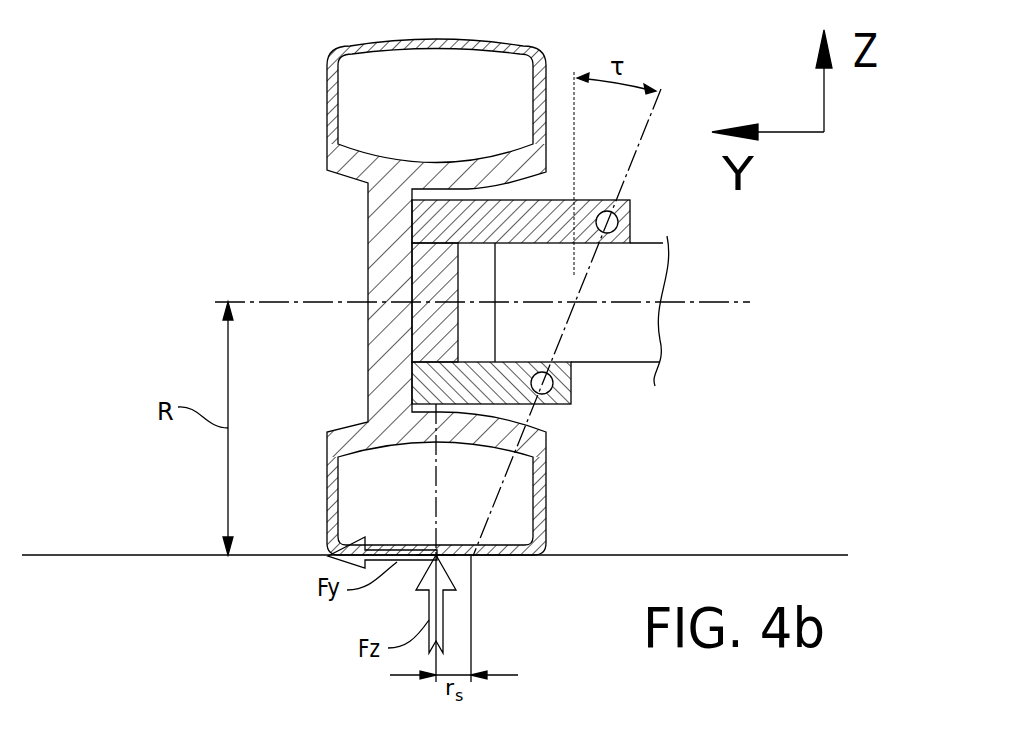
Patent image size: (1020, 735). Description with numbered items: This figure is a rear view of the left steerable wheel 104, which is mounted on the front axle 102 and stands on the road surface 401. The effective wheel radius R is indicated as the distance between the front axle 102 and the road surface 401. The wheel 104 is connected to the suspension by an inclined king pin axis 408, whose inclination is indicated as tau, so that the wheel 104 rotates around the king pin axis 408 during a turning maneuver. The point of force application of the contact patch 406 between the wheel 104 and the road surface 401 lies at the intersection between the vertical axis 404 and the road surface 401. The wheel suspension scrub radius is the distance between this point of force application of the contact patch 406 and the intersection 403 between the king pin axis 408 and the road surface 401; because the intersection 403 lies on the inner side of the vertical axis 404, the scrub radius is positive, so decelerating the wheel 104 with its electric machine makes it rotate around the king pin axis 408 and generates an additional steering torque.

The front axle 102 is at (632, 332).
The left steerable wheel 104 is at (546, 517).
The road surface 401 is at (167, 556).
The intersection between the king pin axis and the road surface 403 is at (471, 556).
The vertical axis 404 is at (436, 508).
The contact patch 406 is at (428, 560).
The king pin axis 408 is at (500, 470).